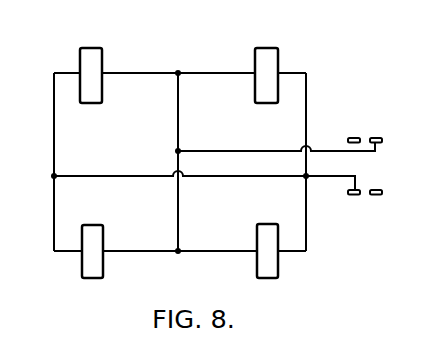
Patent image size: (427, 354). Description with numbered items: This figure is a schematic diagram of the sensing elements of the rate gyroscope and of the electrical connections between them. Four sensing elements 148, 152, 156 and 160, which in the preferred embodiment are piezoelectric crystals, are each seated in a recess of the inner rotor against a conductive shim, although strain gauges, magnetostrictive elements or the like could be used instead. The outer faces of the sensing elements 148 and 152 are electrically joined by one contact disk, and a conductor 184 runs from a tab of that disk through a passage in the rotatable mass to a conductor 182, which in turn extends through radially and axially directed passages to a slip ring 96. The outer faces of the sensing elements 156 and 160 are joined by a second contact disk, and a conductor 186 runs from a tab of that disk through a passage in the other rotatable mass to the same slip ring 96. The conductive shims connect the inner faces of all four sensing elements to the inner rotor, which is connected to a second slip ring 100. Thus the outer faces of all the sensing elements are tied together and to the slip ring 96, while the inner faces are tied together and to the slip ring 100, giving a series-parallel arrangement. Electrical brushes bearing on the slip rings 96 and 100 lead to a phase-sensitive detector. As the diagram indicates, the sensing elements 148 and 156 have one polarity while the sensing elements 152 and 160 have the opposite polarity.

The sensing element 148 is at (91, 48).
The sensing element 156 is at (261, 50).
The sensing element 152 is at (93, 272).
The sensing element 160 is at (268, 271).
The conductor 184 is at (54, 134).
The conductor 182 is at (111, 175).
The conductor 186 is at (306, 92).
The slip ring 96 is at (353, 136).
The slip ring 100 is at (382, 140).